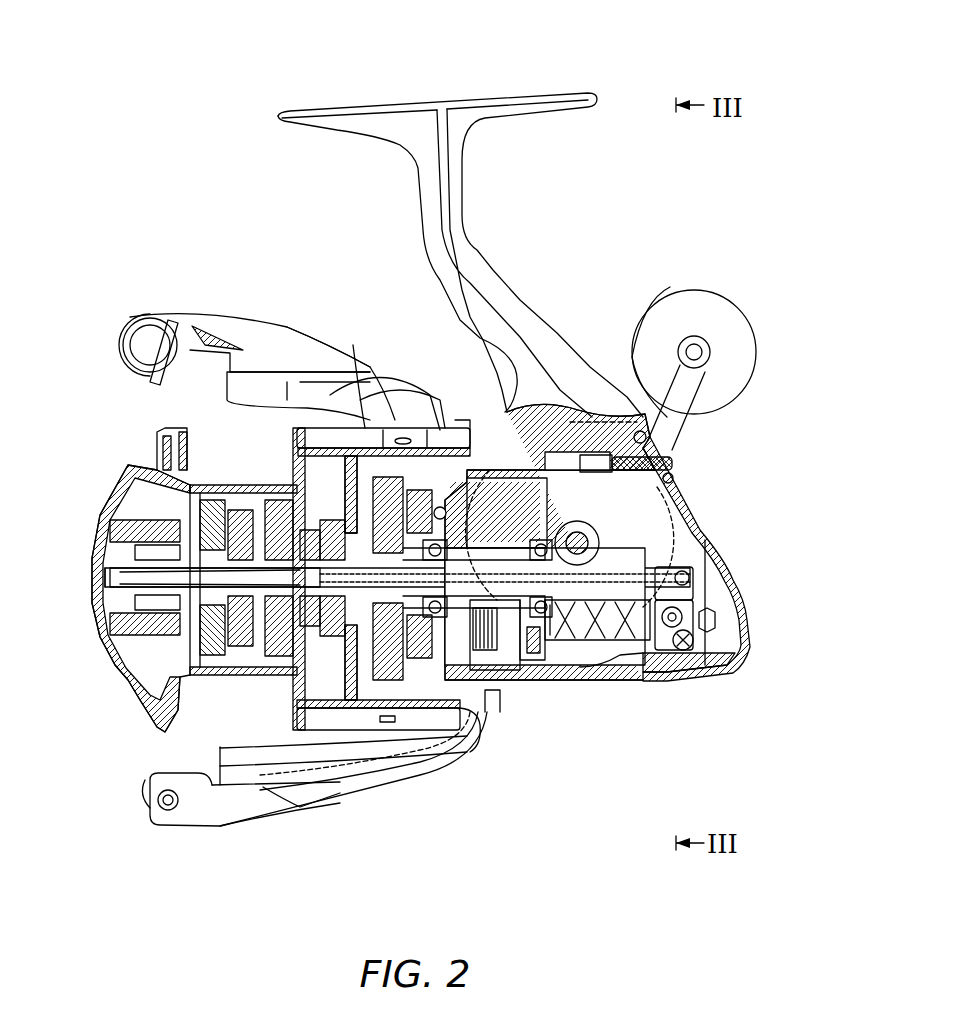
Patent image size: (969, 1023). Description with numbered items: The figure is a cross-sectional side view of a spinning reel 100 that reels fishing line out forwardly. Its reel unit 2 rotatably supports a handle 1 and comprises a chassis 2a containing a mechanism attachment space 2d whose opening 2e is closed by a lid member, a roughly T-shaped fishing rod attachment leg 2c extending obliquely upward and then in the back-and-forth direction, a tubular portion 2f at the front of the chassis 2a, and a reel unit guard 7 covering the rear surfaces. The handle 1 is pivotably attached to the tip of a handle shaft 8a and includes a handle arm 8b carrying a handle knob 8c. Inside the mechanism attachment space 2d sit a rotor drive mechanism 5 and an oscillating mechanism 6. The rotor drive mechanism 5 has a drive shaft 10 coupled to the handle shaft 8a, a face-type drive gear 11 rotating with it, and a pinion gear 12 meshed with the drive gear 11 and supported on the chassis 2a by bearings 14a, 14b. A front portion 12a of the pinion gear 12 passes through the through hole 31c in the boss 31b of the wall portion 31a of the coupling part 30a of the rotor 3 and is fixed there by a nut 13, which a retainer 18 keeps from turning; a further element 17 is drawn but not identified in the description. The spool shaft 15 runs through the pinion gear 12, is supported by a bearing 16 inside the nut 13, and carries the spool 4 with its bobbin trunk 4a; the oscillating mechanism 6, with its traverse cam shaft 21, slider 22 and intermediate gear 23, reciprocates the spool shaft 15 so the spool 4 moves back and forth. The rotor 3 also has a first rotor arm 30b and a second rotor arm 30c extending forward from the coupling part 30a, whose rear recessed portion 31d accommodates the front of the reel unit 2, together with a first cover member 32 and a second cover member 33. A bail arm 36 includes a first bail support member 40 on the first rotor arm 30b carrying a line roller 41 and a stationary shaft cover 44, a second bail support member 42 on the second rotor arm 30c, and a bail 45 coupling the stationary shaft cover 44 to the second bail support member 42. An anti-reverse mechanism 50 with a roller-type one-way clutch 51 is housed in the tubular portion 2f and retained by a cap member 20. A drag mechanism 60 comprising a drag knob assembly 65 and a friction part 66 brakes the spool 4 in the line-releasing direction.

The spinning reel 100 is at (218, 182).
The handle 1 is at (700, 290).
The reel unit 2 is at (530, 273).
The chassis 2a is at (633, 367).
The fishing rod attachment leg 2c is at (470, 240).
The mechanism attachment space 2d is at (663, 550).
The opening 2e is at (613, 685).
The tubular portion 2f is at (430, 775).
The rotor 3 is at (378, 330).
The spool 4 is at (232, 480).
The bobbin trunk 4a is at (230, 440).
The rotor drive mechanism 5 is at (667, 547).
The oscillating mechanism 6 is at (636, 680).
The reel unit guard 7 is at (730, 675).
The handle shaft 8a is at (605, 548).
The handle arm 8b is at (688, 292).
The handle knob 8c is at (722, 292).
The drive shaft 10 is at (578, 465).
The drive gear 11 is at (590, 415).
The pinion gear 12 is at (508, 545).
The front portion 12a is at (340, 780).
The nut 13 is at (310, 500).
The bearing 14a is at (485, 655).
The bearing 14b is at (560, 630).
The spool shaft 15 is at (625, 640).
The bearing 16 is at (275, 650).
The clutch inner race 17 is at (250, 640).
The retainer 18 is at (262, 790).
The cap member 20 is at (287, 372).
The traverse cam shaft 21 is at (715, 580).
The slider 22 is at (692, 675).
The intermediate gear 23 is at (545, 660).
The coupling part 30a is at (405, 370).
The first rotor arm 30b is at (333, 372).
The second rotor arm 30c is at (360, 790).
The wall portion 31a is at (310, 790).
The boss 31b is at (405, 735).
The through hole 31c is at (470, 725).
The recessed portion 31d is at (505, 730).
The first cover member 32 is at (360, 340).
The second cover member 33 is at (370, 770).
The bail arm 36 is at (245, 315).
The first bail support member 40 is at (208, 318).
The line roller 41 is at (135, 320).
The second bail support member 42 is at (225, 820).
The stationary shaft cover 44 is at (120, 322).
The bail 45 is at (140, 375).
The anti-reverse mechanism 50 is at (430, 420).
The one-way clutch 51 is at (465, 420).
The drag mechanism 60 is at (215, 635).
The drag knob assembly 65 is at (110, 660).
The friction part 66 is at (190, 480).